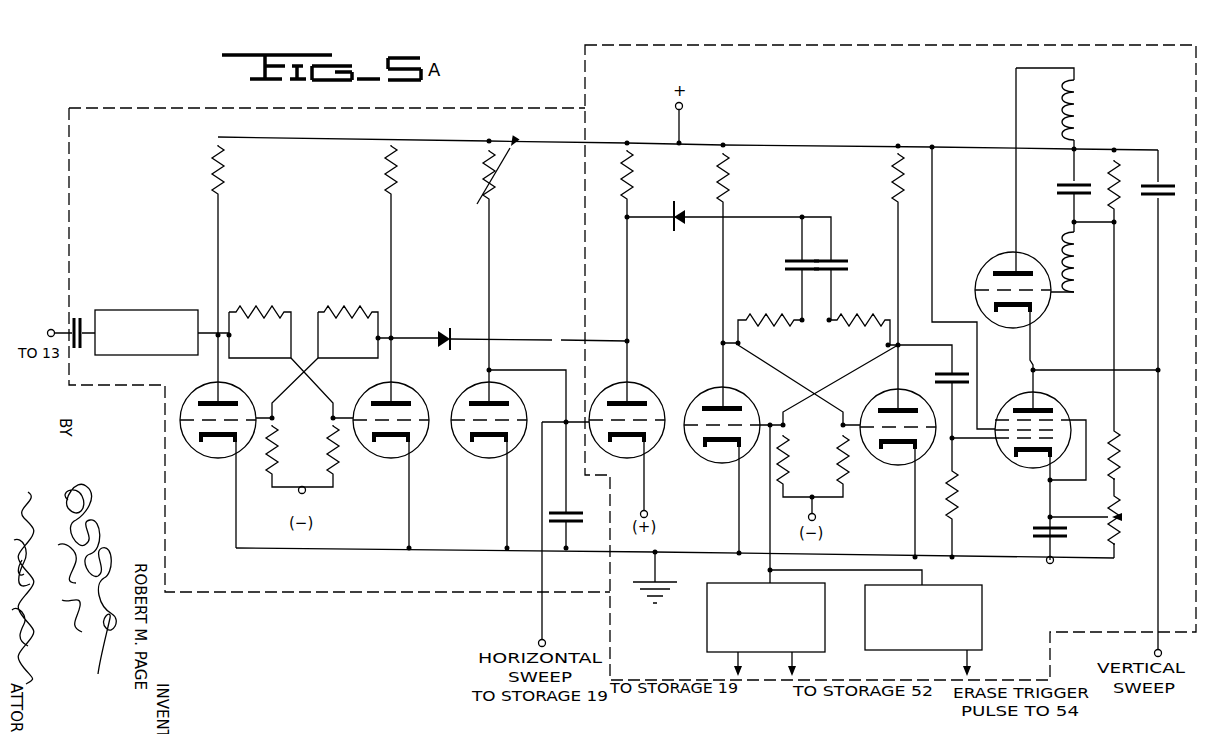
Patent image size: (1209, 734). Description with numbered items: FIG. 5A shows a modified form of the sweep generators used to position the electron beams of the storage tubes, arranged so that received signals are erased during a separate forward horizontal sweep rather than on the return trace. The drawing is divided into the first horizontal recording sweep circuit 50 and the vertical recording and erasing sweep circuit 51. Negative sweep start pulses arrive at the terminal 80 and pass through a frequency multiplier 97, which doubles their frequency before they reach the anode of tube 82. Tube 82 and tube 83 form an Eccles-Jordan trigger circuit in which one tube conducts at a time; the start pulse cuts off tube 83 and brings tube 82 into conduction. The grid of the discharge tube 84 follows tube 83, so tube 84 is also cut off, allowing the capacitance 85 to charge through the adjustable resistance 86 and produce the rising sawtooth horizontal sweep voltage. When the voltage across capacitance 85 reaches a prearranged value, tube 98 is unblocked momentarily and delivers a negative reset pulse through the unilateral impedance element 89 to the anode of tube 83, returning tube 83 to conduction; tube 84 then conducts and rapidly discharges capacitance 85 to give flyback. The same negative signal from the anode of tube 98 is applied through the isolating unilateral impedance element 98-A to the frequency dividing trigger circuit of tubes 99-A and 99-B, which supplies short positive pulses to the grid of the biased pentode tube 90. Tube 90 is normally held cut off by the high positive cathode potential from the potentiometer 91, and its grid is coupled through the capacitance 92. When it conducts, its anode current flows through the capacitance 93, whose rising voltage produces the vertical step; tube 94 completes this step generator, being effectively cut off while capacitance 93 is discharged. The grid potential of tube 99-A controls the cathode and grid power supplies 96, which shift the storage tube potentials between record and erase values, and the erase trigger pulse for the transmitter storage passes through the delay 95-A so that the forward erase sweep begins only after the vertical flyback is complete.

The first horizontal recording sweep circuit 50 is at (352, 593).
The vertical recording and erasing sweep circuit 51 is at (581, 76).
The terminal 80 is at (51, 330).
The frequency multiplier 97 is at (121, 310).
The tube 82 is at (190, 454).
The tube 83 is at (368, 455).
The discharge tube 84 is at (466, 455).
The resistance 86 is at (491, 187).
The unilateral impedance element 89 is at (446, 329).
The capacitance 85 is at (584, 521).
The tube 98 is at (656, 386).
The isolating unilateral impedance element 98-A is at (677, 221).
The tube 99-A is at (696, 461).
The tube 99-B is at (872, 463).
The capacitance 92 is at (936, 378).
The biased pentode tube 90 is at (1051, 401).
The tube 94 is at (986, 262).
The potentiometer 91 is at (1118, 517).
The capacitance 93 is at (1178, 192).
The cathode and grid power supplies 96 is at (728, 583).
The delay 95-A is at (945, 589).